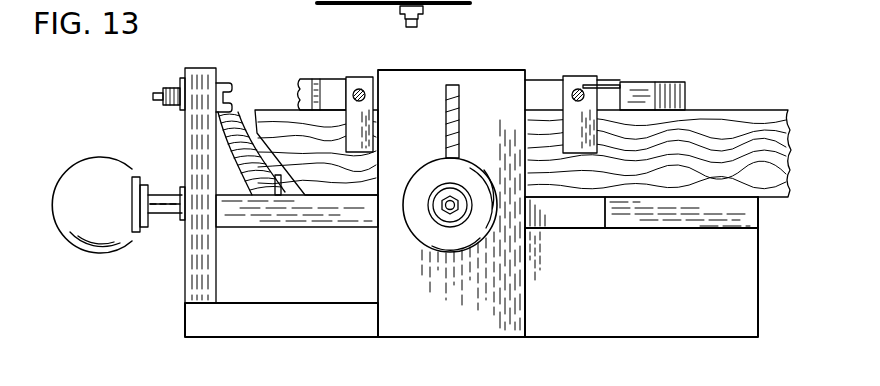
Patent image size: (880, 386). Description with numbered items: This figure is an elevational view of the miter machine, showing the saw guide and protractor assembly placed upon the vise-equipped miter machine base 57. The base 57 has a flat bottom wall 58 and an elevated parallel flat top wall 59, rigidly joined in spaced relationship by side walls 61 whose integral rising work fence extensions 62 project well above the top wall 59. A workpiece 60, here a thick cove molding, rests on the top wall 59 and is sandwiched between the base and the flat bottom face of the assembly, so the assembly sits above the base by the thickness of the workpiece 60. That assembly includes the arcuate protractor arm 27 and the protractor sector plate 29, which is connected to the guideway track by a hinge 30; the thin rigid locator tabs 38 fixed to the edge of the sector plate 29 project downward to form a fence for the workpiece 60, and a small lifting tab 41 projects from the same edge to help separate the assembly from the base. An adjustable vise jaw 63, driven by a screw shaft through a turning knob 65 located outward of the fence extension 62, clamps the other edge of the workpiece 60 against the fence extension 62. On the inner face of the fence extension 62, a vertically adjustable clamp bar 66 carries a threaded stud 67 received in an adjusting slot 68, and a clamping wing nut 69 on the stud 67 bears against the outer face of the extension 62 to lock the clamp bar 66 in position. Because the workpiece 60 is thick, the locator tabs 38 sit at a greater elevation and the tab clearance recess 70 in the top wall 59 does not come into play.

The arcuate protractor arm 27 is at (668, 82).
The protractor sector plate 29 is at (548, 80).
The hinge 30 is at (320, 80).
The locator tabs 38 is at (353, 150).
The lifting tab 41 is at (608, 78).
The miter machine base 57 is at (770, 219).
The bottom wall 58 is at (341, 318).
The top wall 59 is at (672, 213).
The workpiece 60 is at (226, 150).
The side walls 61 is at (568, 318).
The work fence extensions 62 is at (496, 82).
The adjustable jaw 63 is at (292, 198).
The turning knob 65 is at (127, 233).
The clamp bar 66 is at (228, 83).
The threaded stud 67 is at (152, 96).
The adjusting slot 68 is at (452, 85).
The clamping wing nut 69 is at (174, 80).
The recess 70 is at (588, 224).